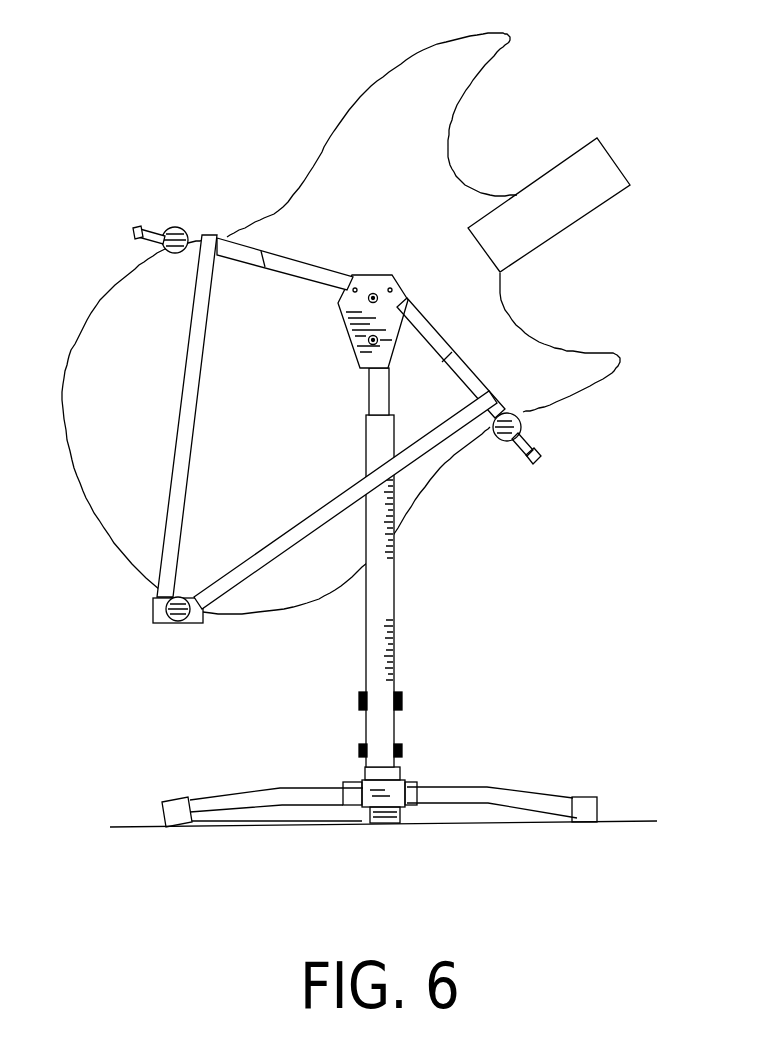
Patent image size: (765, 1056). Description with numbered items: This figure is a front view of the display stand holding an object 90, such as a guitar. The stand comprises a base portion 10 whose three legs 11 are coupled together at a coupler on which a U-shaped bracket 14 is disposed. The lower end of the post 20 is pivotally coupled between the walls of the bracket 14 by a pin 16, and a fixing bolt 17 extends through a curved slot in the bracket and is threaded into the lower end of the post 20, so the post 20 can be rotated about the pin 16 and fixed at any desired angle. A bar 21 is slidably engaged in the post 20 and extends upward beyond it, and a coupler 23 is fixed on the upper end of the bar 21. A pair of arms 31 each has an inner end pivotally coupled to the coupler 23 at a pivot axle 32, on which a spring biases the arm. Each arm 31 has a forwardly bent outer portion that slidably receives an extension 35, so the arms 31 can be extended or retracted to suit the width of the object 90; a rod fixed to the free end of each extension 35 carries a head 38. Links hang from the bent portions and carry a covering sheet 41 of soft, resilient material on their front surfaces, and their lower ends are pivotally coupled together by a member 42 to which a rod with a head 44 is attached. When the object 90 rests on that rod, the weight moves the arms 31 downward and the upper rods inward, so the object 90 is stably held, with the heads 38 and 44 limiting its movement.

The base portion 10 is at (407, 813).
The legs 11 is at (541, 794).
The U-shaped bracket 14 is at (403, 745).
The pin 16 is at (358, 750).
The fixing bolt 17 is at (403, 700).
The post 20 is at (366, 456).
The bar 21 is at (368, 386).
The coupler 23 is at (341, 318).
The arms 31 is at (427, 334).
The pivot axle 32 is at (470, 382).
The extension 35 is at (540, 457).
The head 38 is at (506, 443).
The covering sheet 41 is at (314, 537).
The member 42 is at (200, 625).
The head 44 is at (172, 625).
The object 90 is at (330, 133).